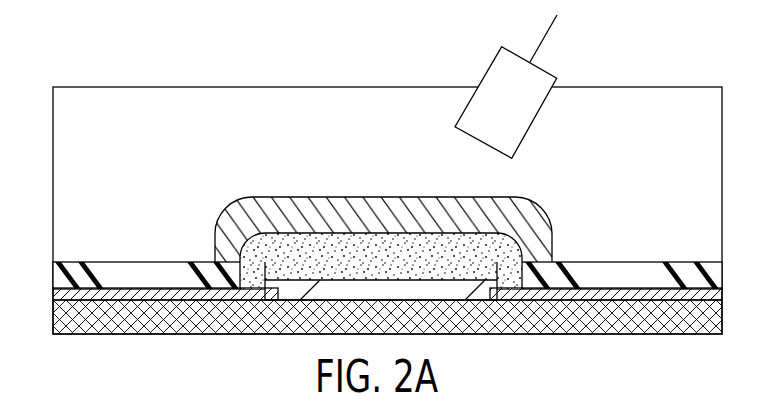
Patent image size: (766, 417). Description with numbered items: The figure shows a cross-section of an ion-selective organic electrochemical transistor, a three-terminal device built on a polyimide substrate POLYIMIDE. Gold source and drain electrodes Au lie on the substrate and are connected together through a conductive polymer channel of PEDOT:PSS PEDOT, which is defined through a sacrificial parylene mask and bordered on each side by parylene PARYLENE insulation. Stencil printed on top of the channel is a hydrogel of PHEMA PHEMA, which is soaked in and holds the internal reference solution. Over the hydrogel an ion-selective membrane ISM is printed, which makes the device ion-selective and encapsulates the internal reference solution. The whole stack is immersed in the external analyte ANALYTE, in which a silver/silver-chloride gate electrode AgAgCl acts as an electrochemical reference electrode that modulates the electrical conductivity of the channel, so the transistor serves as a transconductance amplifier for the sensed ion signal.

The analyte ANALYTE is at (359, 155).
The ion-selective membrane ISM is at (383, 243).
The PHEMA hydrogel PHEMA is at (381, 261).
The PEDOT:PSS channel PEDOT is at (381, 283).
The parylene PARYLENE is at (387, 277).
The gold source-drain electrodes Au is at (388, 295).
The polyimide substrate POLYIMIDE is at (387, 317).
The Ag/AgCl gate electrode AgAgCl is at (531, 86).